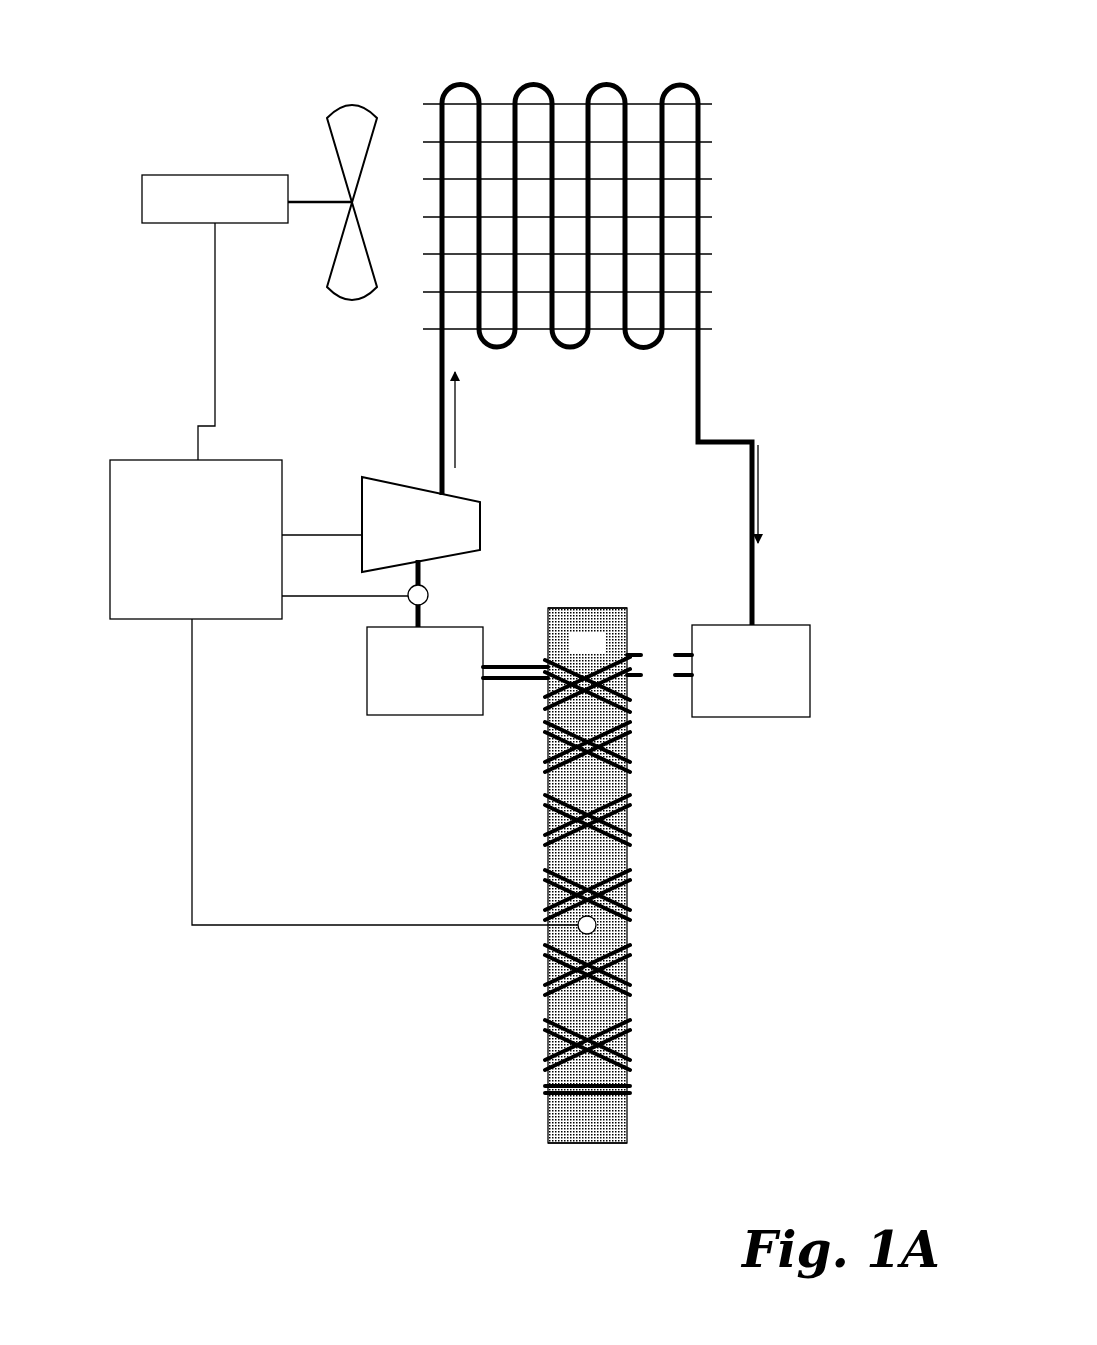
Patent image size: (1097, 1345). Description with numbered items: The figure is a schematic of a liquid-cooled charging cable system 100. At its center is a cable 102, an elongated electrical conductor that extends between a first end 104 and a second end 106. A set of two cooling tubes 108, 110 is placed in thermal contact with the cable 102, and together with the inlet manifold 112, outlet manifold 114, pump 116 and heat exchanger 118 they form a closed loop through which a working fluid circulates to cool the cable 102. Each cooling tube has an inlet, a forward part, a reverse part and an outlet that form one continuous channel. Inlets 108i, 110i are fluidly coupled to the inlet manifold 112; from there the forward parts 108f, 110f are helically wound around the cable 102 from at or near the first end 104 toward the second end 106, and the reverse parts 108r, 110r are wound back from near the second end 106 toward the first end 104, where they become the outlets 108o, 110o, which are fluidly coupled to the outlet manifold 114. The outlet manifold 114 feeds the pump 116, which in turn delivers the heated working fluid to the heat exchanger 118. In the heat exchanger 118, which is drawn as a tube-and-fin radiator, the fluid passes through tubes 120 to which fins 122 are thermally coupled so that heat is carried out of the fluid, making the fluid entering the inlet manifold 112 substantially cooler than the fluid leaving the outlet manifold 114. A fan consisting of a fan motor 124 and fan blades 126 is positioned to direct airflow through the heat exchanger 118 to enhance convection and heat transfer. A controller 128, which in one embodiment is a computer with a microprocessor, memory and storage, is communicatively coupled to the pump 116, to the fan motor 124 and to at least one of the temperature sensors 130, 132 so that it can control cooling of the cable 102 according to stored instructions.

The liquid-cooled charging cable system 100 is at (190, 68).
The cable 102 is at (588, 876).
The first end 104 is at (587, 608).
The second end 106 is at (585, 1143).
The cooling tube 108 is at (587, 826).
The cooling tube 110 is at (586, 880).
The outlet 108o is at (498, 664).
The outlet 110o is at (497, 682).
The inlet 108i is at (697, 767).
The inlet 110i is at (680, 727).
The reverse part 108r is at (546, 795).
The reverse part 110r is at (546, 805).
The forward part 108f is at (630, 795).
The forward part 110f is at (630, 805).
The inlet manifold 112 is at (751, 671).
The outlet manifold 114 is at (425, 671).
The pump 116 is at (421, 552).
The heat exchanger 118 is at (619, 317).
The tubes 120 is at (718, 198).
The fins 122 is at (712, 109).
The fan motor 124 is at (247, 317).
The fan blades 126 is at (348, 117).
The controller 128 is at (344, 692).
The temperature sensor 130 is at (596, 923).
The temperature sensor 132 is at (409, 606).